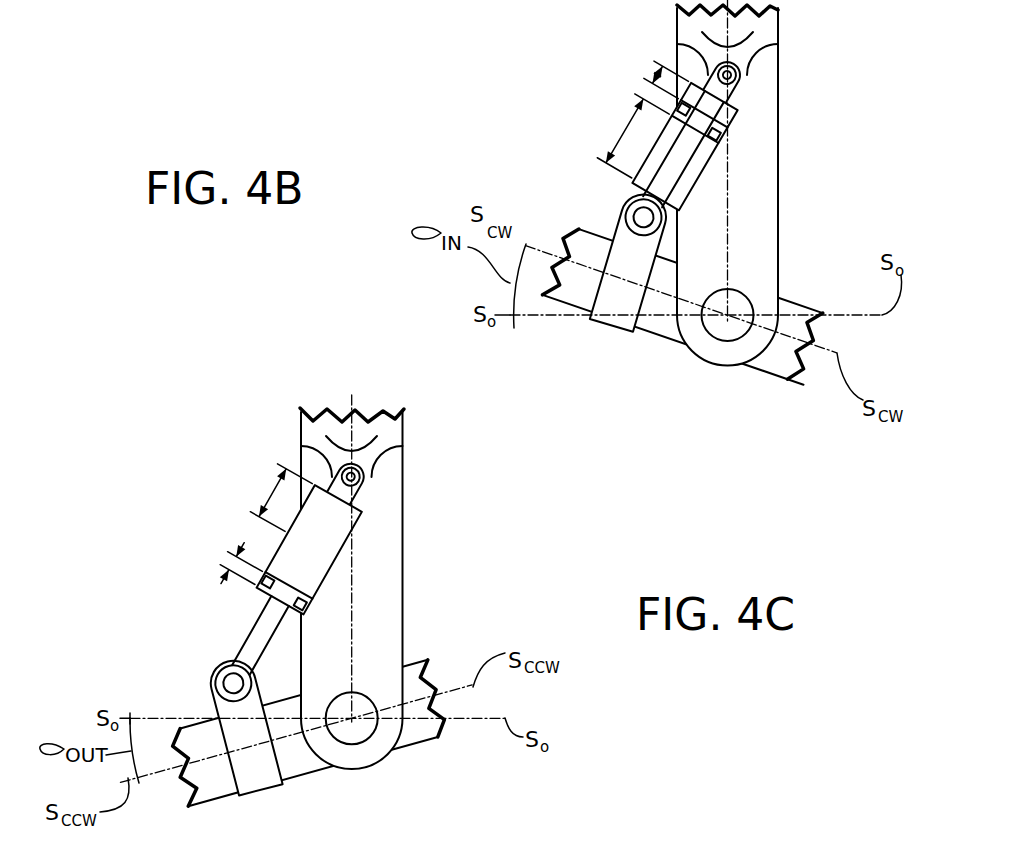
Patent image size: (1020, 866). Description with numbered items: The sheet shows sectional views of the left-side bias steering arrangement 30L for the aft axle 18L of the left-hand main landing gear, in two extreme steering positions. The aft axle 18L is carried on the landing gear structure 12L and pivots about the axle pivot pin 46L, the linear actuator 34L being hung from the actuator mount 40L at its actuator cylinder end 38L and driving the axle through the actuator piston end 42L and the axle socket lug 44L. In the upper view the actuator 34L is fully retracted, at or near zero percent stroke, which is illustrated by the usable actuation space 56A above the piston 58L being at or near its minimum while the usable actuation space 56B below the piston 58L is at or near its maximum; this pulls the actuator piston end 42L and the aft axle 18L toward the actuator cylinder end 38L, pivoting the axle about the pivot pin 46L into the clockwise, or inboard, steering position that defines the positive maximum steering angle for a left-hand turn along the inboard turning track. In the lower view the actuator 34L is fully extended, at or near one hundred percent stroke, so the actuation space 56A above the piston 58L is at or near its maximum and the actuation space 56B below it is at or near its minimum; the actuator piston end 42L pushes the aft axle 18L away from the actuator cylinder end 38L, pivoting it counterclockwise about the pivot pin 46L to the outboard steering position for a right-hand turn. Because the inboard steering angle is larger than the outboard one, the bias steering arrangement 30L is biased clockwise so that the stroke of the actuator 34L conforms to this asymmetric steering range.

In FIG. 4B, the frame member 12L is at (762, 107).
In FIG. 4C, the frame member 12L is at (387, 510).
In FIG. 4B, the aft axle 18L is at (543, 290).
In FIG. 4C, the aft axle 18L is at (173, 783).
In FIG. 4B, the bias steering arrangement 30L is at (567, 131).
In FIG. 4C, the bias steering arrangement 30L is at (190, 532).
In FIG. 4B, the actuator 34L is at (731, 133).
In FIG. 4C, the actuator 34L is at (355, 537).
In FIG. 4B, the actuator cylinder end 38L is at (713, 160).
In FIG. 4C, the actuator cylinder end 38L is at (347, 547).
In FIG. 4B, the actuator mount 40L is at (738, 78).
In FIG. 4C, the actuator mount 40L is at (367, 482).
In FIG. 4B, the actuator piston end 42L is at (641, 196).
In FIG. 4C, the actuator piston end 42L is at (268, 608).
In FIG. 4B, the axle socket lug 44L is at (618, 333).
In FIG. 4C, the axle socket lug 44L is at (247, 748).
In FIG. 4B, the axle pivot pin 46L is at (728, 315).
In FIG. 4C, the axle pivot pin 46L is at (352, 720).
In FIG. 4B, the actuation space 56A is at (657, 62).
In FIG. 4C, the actuation space 56A is at (277, 490).
In FIG. 4B, the actuation space 56B is at (613, 133).
In FIG. 4C, the actuation space 56B is at (227, 568).
In FIG. 4B, the piston 58L is at (674, 110).
In FIG. 4C, the piston 58L is at (307, 592).